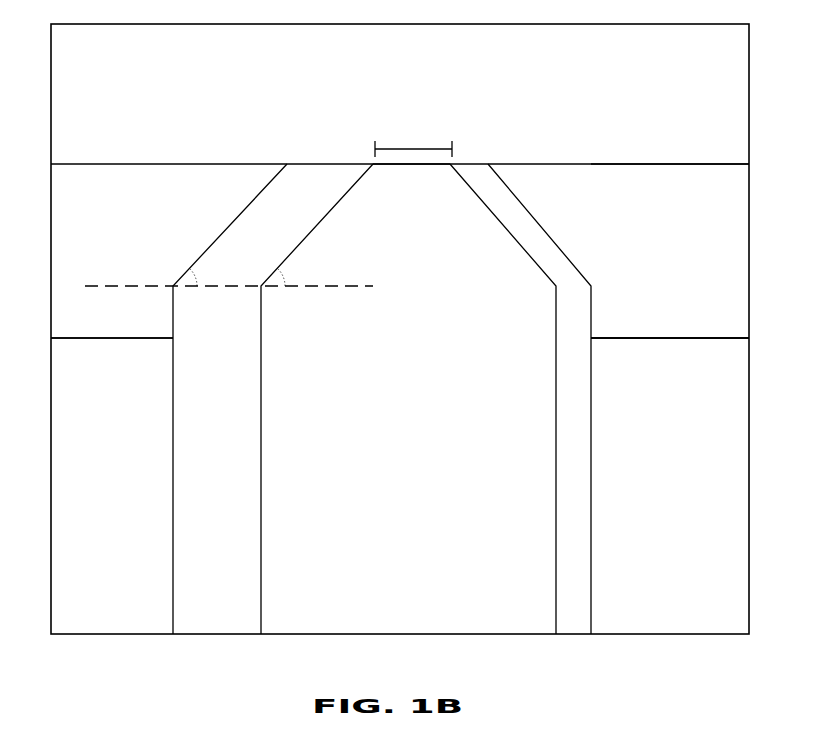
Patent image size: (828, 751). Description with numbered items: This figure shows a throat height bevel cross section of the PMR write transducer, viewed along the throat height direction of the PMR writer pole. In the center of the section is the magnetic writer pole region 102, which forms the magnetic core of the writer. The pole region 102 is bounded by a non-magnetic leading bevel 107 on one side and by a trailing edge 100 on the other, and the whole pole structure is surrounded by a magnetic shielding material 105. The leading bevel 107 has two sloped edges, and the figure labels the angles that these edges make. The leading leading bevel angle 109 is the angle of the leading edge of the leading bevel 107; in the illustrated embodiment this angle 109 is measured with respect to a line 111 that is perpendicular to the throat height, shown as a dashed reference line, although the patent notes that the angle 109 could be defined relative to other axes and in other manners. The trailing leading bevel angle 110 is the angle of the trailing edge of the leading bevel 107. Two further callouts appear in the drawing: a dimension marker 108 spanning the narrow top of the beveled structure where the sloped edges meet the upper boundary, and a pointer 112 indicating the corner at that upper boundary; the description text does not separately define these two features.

The trailing edge 100 is at (592, 463).
The magnetic writer pole region 102 is at (435, 311).
The magnetic shielding material 105 is at (658, 240).
The non-magnetic leading bevel 107 is at (325, 199).
The top width of fin 108 is at (413, 148).
The leading leading bevel angle 109 is at (197, 275).
The trailing leading bevel angle 110 is at (285, 275).
The line perpendicular to the throat height 111 is at (130, 285).
The top corner of fin 112 is at (439, 174).